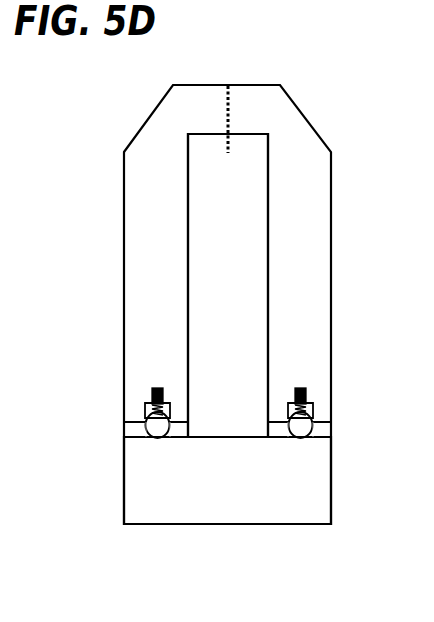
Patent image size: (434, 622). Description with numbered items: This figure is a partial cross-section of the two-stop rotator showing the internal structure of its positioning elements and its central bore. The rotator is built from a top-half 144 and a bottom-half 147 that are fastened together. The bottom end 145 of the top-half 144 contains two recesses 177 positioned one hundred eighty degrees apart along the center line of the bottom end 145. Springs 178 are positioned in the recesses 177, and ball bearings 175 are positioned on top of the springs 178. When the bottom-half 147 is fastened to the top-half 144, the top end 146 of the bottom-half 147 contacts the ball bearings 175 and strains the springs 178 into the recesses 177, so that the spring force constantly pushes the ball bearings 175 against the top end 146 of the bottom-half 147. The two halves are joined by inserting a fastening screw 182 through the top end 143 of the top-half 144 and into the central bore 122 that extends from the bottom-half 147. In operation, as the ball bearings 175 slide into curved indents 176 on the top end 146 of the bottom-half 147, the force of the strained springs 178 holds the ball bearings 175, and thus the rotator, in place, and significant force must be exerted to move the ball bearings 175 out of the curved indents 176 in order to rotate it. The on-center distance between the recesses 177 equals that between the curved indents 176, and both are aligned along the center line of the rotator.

The central bore 122 is at (258, 176).
The top end 143 is at (194, 85).
The top-half 144 is at (312, 205).
The bottom end 145 is at (170, 430).
The top end 146 is at (327, 435).
The bottom-half 147 is at (305, 492).
The ball bearings 175 is at (143, 428).
The curved indents 176 is at (155, 440).
The recesses 177 is at (145, 412).
The springs 178 is at (151, 395).
The fastening screw 182 is at (228, 85).